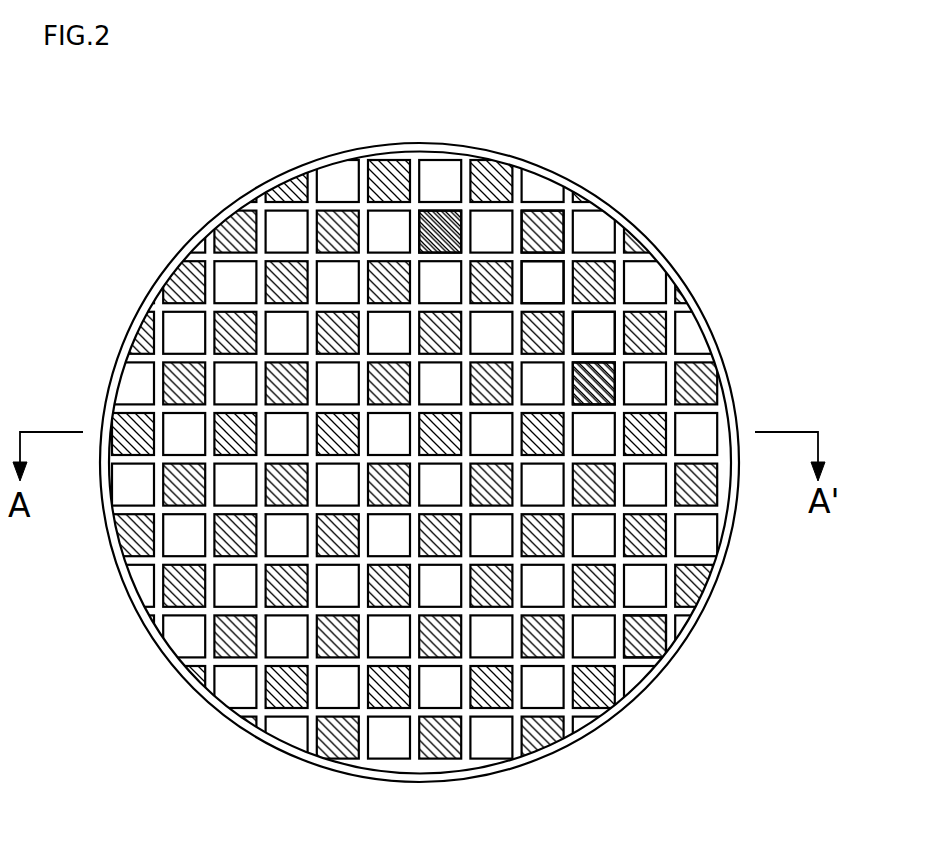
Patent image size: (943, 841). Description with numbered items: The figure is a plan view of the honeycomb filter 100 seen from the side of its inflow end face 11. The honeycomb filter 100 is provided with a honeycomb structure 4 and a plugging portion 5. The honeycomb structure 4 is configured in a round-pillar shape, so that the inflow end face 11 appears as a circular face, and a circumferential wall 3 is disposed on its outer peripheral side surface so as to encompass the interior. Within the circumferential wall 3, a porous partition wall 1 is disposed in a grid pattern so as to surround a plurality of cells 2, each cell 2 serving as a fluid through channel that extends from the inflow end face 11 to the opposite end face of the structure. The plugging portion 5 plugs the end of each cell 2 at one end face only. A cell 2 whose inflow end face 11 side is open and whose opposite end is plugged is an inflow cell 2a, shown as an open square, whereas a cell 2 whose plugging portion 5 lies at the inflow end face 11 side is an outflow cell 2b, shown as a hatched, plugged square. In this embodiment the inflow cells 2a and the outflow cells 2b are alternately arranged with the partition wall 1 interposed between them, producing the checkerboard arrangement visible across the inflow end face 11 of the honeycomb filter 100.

The honeycomb filter 100 is at (810, 106).
The inflow end face 11 is at (193, 212).
The partition wall 1 is at (548, 255).
The cell 2 is at (700, 303).
The inflow cell 2a is at (593, 332).
The outflow cell 2b is at (585, 382).
The circumferential wall 3 is at (670, 650).
The honeycomb structure 4 is at (739, 387).
The plugging portion 5 is at (437, 237).